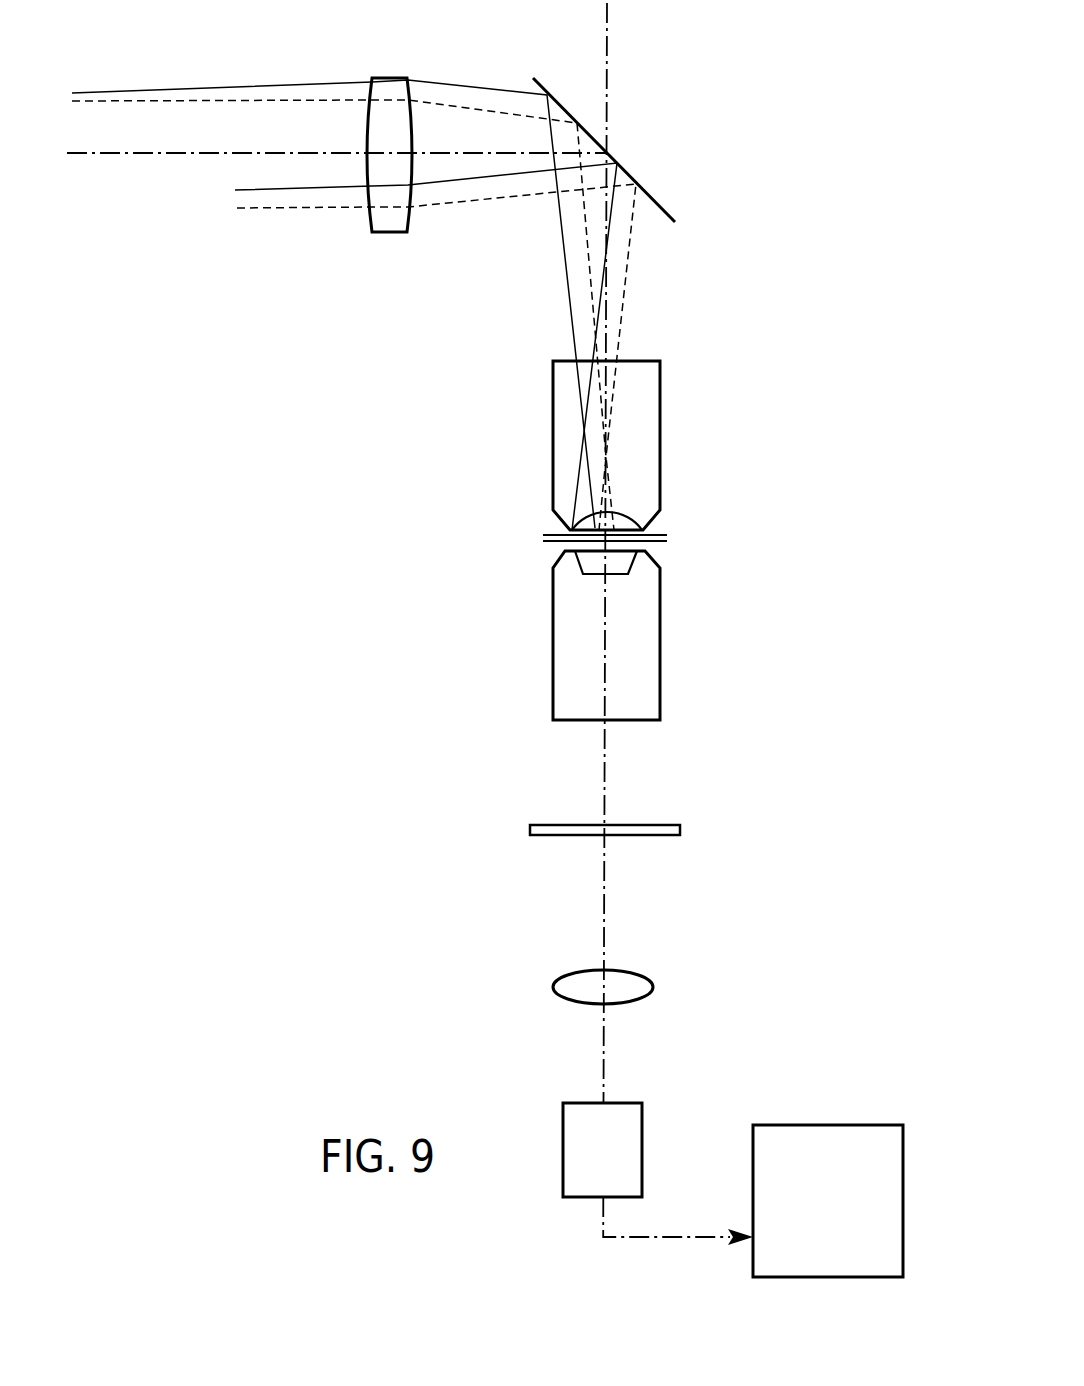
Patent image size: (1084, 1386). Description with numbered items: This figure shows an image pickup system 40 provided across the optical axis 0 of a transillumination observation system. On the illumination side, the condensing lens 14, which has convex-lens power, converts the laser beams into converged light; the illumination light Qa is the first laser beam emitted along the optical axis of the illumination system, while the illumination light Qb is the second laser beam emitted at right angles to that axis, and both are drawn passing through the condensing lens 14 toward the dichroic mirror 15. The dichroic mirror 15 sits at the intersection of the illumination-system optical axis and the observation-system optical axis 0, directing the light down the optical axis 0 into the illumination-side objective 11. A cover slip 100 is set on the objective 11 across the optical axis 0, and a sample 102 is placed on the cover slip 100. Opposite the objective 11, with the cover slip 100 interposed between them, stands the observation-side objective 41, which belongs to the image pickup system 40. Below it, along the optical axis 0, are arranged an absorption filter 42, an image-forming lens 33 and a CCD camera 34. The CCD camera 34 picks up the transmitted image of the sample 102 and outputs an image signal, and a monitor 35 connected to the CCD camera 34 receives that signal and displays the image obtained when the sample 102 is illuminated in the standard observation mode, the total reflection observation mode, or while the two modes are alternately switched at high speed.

The optical axis 0 is at (607, 48).
The illumination light Qa is at (175, 100).
The illumination light Qb is at (270, 85).
The condensing lens 14 is at (387, 233).
The dichroic mirror 15 is at (658, 203).
The objective 11 is at (660, 403).
The cover slip 100 is at (663, 533).
The sample 102 is at (613, 539).
The image pickup system 40 is at (679, 697).
The observation-side objective 41 is at (660, 643).
The absorption filter 42 is at (680, 829).
The image-forming lens 33 is at (653, 985).
The CCD camera 34 is at (642, 1113).
The monitor 35 is at (842, 1125).